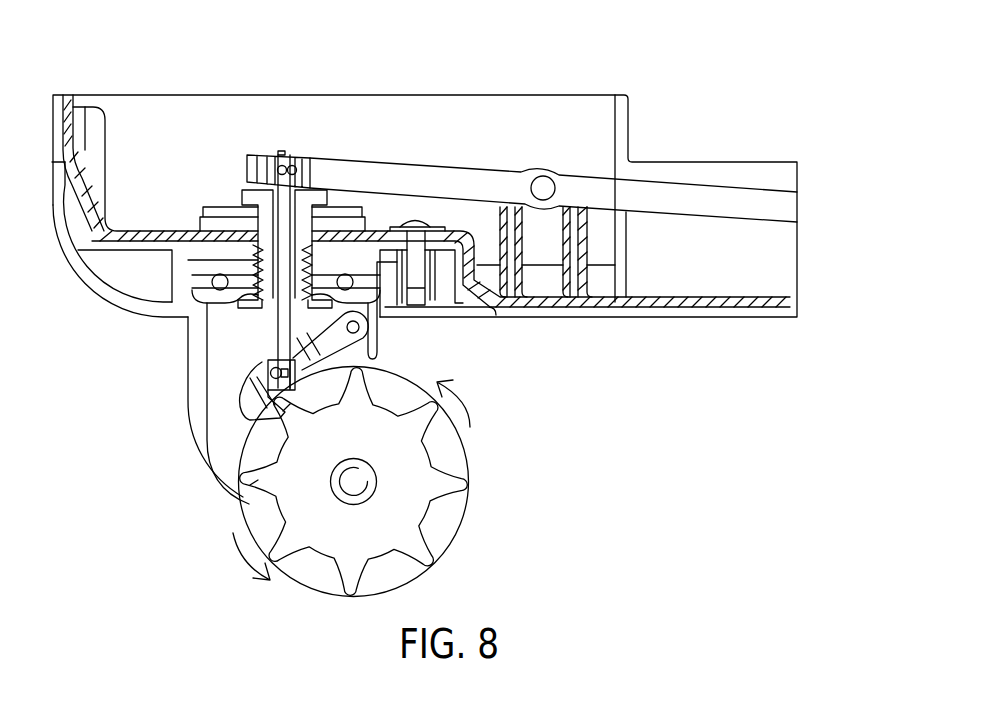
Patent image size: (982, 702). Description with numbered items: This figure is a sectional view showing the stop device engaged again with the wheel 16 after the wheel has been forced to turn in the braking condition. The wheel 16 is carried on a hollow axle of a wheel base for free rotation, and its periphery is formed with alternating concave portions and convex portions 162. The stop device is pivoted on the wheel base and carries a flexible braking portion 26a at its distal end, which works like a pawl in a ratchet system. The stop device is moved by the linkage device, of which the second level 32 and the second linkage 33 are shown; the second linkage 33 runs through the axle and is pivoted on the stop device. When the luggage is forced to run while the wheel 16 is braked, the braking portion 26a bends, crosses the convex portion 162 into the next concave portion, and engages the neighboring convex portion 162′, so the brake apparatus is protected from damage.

The wheel 16 is at (490, 480).
The convex portion 162 is at (255, 482).
The neighboring convex portion 162′ is at (285, 410).
The flexible braking portion 26a is at (247, 409).
The second level 32 is at (421, 178).
The second linkage 33 is at (278, 330).